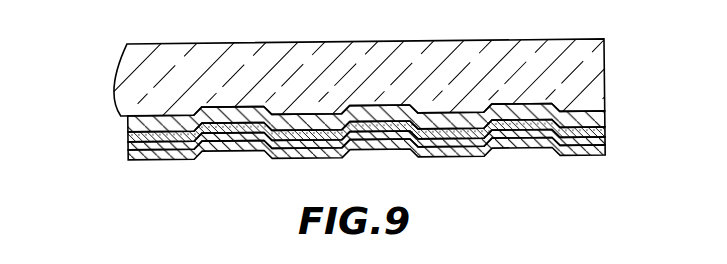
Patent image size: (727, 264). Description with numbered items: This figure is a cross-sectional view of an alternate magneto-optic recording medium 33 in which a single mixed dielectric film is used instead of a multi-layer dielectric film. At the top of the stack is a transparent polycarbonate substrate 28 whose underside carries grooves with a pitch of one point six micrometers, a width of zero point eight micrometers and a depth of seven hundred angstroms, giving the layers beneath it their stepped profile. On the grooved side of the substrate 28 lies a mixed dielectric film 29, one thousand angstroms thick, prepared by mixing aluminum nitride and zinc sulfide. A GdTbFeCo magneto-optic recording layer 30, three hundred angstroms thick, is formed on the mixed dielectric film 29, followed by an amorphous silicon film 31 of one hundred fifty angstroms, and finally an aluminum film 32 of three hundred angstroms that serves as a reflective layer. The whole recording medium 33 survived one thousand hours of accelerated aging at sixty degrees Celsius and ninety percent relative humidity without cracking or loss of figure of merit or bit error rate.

The transparent substrate 28 is at (590, 62).
The mixed dielectric film 29 is at (598, 122).
The magneto-optic recording layer 30 is at (603, 135).
The amorphous silicon film 31 is at (603, 142).
The aluminum film 32 is at (603, 150).
The magneto-optic recording medium 33 is at (97, 45).